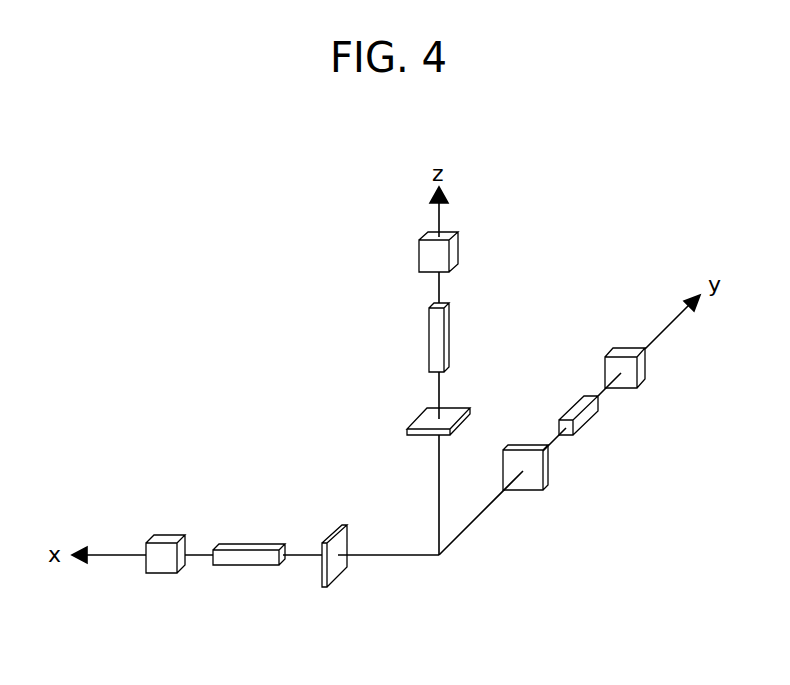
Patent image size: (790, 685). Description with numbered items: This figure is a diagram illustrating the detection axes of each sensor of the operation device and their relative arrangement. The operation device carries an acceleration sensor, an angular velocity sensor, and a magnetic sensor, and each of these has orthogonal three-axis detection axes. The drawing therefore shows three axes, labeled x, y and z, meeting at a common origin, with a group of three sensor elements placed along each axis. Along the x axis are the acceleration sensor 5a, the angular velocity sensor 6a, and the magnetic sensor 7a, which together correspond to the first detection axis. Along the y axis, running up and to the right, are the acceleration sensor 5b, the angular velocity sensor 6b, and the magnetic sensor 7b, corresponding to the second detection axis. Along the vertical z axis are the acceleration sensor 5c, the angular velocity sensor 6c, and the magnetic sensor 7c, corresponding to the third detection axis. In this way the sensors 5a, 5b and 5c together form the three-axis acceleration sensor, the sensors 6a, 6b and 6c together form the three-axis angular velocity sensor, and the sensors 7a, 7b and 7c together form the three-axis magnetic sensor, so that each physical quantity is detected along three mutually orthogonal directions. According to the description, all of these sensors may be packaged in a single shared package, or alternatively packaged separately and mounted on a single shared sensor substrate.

The acceleration sensor (x-axis detection) 5a is at (338, 580).
The angular velocity sensor (x-axis detection) 6a is at (252, 565).
The magnetic sensor (x-axis detection) 7a is at (165, 573).
The acceleration sensor (y-axis detection) 5b is at (548, 478).
The angular velocity sensor (y-axis detection) 6b is at (583, 426).
The magnetic sensor (y-axis detection) 7b is at (645, 372).
The acceleration sensor (z-axis detection) 5c is at (413, 415).
The angular velocity sensor (z-axis detection) 6c is at (428, 330).
The magnetic sensor (z-axis detection) 7c is at (419, 254).